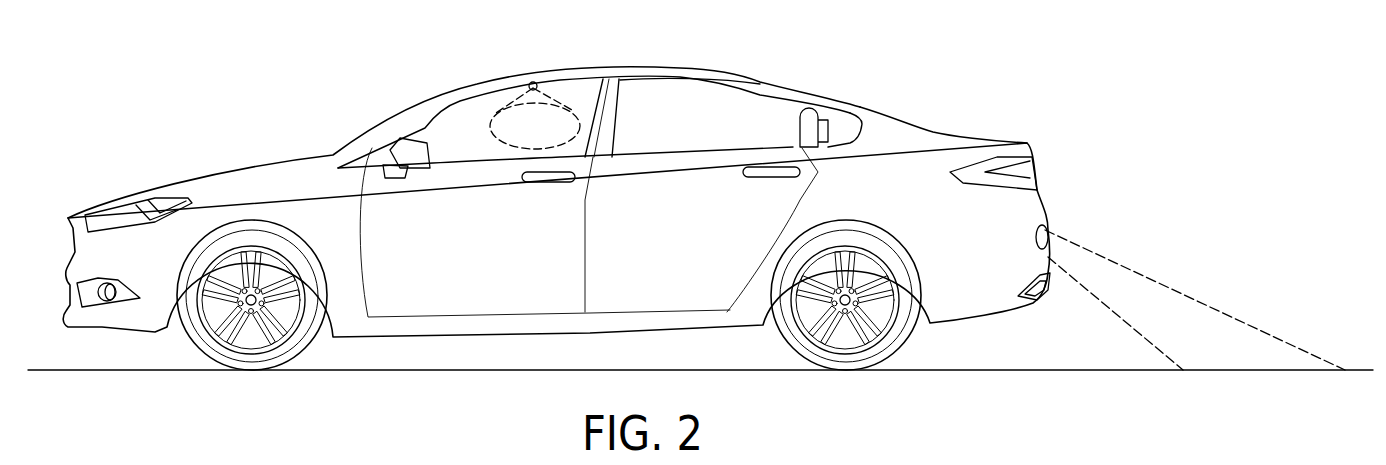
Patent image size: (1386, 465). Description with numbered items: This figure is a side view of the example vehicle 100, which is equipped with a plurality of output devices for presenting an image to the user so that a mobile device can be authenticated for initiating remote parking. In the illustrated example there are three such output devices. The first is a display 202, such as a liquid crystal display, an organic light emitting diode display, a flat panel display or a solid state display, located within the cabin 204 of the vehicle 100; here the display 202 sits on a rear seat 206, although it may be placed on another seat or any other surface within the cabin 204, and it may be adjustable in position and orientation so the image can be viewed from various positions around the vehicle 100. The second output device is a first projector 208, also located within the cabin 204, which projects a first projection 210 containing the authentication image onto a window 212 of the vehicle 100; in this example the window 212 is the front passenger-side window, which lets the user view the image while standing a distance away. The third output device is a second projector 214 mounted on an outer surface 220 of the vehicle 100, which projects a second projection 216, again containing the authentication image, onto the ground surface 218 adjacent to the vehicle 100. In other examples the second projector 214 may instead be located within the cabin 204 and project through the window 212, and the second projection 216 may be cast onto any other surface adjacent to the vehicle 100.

The vehicle 100 is at (979, 107).
The display 202 is at (848, 132).
The cabin 204 is at (722, 130).
The rear seat 206 is at (810, 115).
The projector 208 is at (533, 82).
The projection 210 is at (525, 130).
The window 212 is at (580, 98).
The projector 214 is at (1052, 222).
The projection 216 is at (1258, 380).
The ground surface 218 is at (1140, 372).
The outer surface 220 is at (935, 132).